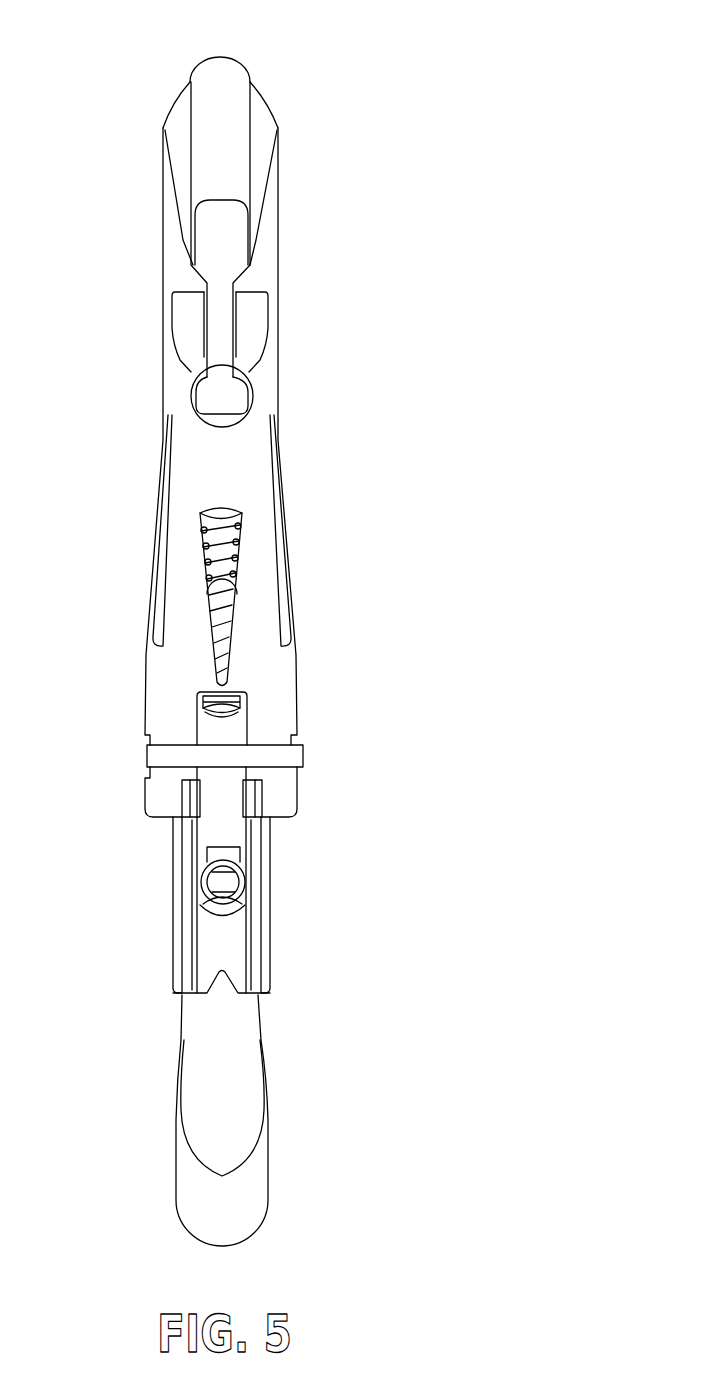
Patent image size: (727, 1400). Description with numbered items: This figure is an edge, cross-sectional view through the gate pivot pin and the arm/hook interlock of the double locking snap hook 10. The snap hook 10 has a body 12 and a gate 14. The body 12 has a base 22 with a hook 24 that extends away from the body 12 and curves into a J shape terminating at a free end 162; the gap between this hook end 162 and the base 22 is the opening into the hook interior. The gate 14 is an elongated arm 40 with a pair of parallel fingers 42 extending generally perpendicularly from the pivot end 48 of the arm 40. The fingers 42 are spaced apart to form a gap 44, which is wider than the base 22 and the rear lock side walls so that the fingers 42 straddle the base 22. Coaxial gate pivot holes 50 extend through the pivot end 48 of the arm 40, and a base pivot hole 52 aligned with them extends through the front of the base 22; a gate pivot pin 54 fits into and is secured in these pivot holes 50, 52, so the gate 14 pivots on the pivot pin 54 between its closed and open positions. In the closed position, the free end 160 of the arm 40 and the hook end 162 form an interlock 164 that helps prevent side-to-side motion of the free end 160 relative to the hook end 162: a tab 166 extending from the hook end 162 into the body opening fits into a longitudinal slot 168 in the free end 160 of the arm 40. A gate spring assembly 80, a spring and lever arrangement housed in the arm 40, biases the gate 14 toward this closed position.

The double locking snap hook 10 is at (104, 123).
The body 12 is at (255, 56).
The gate 14 is at (305, 679).
The base 22 is at (207, 825).
The hook 24 is at (279, 218).
The arm 40 is at (273, 496).
The fingers 42 is at (146, 797).
The gap 44 is at (197, 702).
The pivot end 48 is at (283, 820).
The gate pivot holes 50 is at (170, 770).
The base pivot hole 52 is at (238, 745).
The gate pivot pin 54 is at (158, 757).
The gate spring assembly 80 is at (256, 572).
The free end of the arm 160 is at (253, 292).
The free end of the hook 162 is at (222, 413).
The interlock 164 is at (134, 304).
The tab 166 is at (240, 366).
The longitudinal slot 168 is at (204, 333).